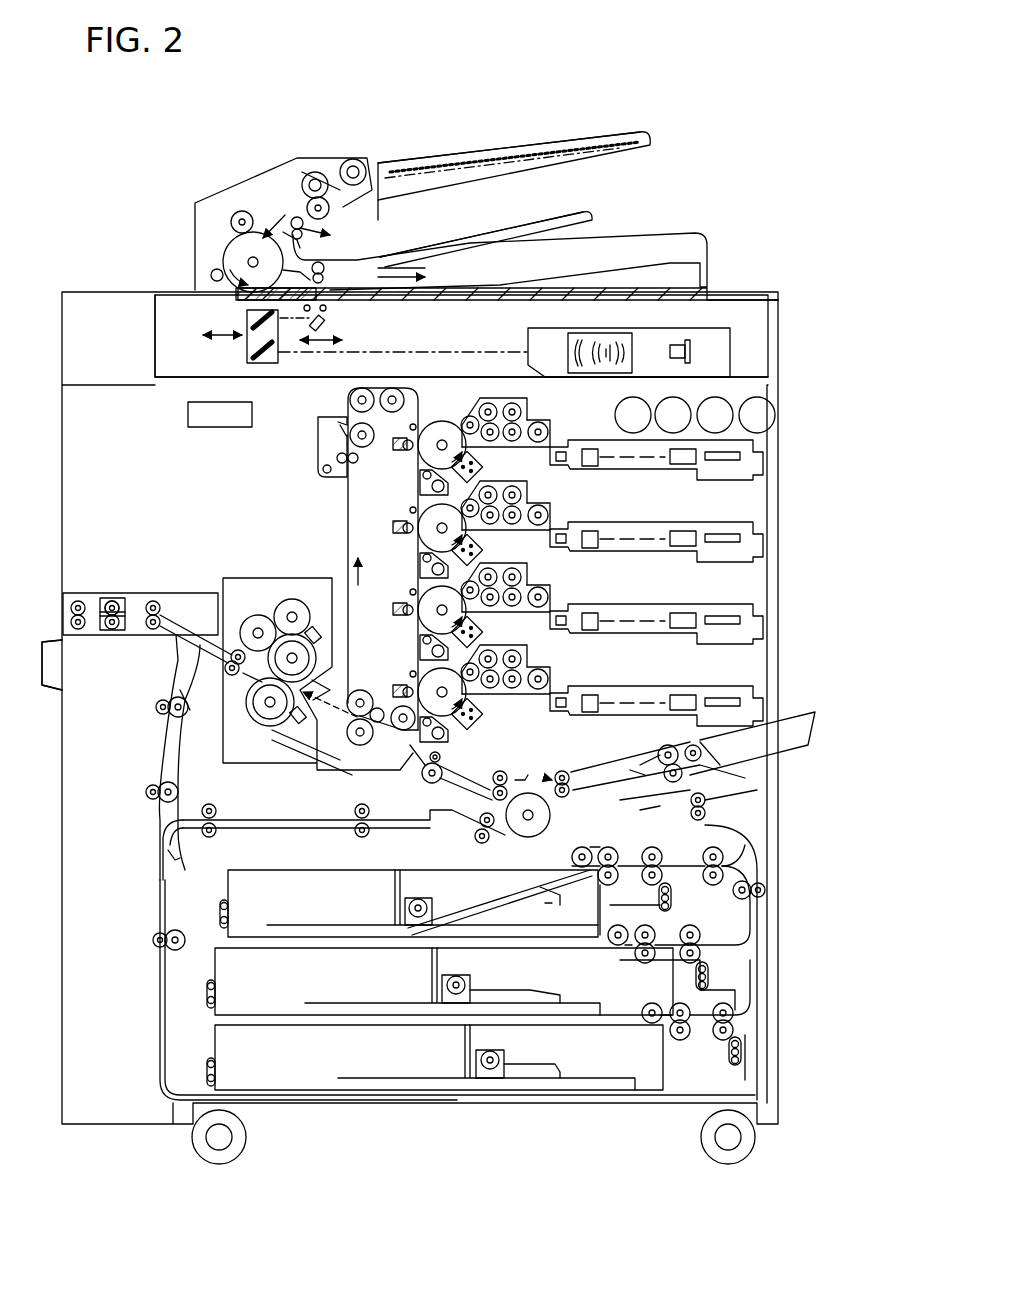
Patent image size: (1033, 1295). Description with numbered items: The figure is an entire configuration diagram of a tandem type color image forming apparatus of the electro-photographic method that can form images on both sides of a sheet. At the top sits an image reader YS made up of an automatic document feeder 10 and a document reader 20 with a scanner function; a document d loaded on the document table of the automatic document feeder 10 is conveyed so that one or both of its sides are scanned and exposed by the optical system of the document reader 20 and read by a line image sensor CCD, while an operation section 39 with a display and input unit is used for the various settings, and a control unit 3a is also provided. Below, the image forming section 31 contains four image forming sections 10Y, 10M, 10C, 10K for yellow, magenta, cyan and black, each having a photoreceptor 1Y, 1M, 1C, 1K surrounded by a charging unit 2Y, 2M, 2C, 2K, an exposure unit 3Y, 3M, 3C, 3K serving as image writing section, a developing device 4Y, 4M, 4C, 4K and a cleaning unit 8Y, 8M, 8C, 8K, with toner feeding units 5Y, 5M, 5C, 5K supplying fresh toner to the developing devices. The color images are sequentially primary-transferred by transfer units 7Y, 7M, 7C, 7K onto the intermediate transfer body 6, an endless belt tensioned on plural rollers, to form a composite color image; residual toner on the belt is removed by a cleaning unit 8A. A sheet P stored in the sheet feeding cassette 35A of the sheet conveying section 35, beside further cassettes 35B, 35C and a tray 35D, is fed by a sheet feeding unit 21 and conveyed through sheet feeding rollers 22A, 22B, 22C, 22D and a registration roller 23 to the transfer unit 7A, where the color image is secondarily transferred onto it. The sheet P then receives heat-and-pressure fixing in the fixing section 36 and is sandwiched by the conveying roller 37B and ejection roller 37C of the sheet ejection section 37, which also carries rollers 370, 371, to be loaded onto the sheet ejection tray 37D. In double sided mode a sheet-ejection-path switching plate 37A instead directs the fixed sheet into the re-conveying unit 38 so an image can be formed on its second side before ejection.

The automatic document feeder 10 is at (690, 136).
The document d is at (508, 152).
The image reader YS is at (710, 220).
The operation section 39 is at (770, 290).
The document reader 20 is at (786, 360).
The image forming section 31 is at (436, 386).
The line image sensor CCD is at (694, 345).
The control unit 3a is at (190, 418).
The intermediate transfer body 6 is at (348, 519).
The cleaning unit 8A is at (318, 447).
The photoreceptor 1Y is at (420, 422).
The photoreceptor 1M is at (418, 512).
The photoreceptor 1C is at (418, 594).
The photoreceptor 1K is at (420, 674).
The charging unit 2Y is at (481, 466).
The charging unit 2M is at (481, 549).
The charging unit 2C is at (481, 631).
The charging unit 2K is at (481, 714).
The exposure unit 3Y is at (652, 470).
The exposure unit 3M is at (650, 552).
The exposure unit 3C is at (718, 604).
The exposure unit 3K is at (668, 687).
The developing device 4Y is at (478, 402).
The developing device 4M is at (528, 497).
The developing device 4C is at (528, 579).
The developing device 4K is at (528, 661).
The toner feeding unit 5Y is at (633, 415).
The toner feeding unit 5M is at (673, 415).
The toner feeding unit 5C is at (715, 415).
The toner feeding unit 5K is at (757, 415).
The transfer unit 7Y is at (408, 452).
The transfer unit 7M is at (408, 535).
The transfer unit 7C is at (408, 617).
The transfer unit 7K is at (395, 688).
The cleaning unit 8Y is at (420, 487).
The cleaning unit 8M is at (420, 572).
The cleaning unit 8C is at (420, 645).
The cleaning unit 8K is at (448, 735).
The image forming section 10Y is at (608, 417).
The image forming section 10M is at (625, 502).
The image forming section 10C is at (622, 585).
The image forming section 10K is at (622, 668).
The transfer unit 7A is at (368, 745).
The fixing section 36 is at (252, 586).
The sheet ejection section 37 is at (55, 592).
The sheet-ejection-path switching plate 37A is at (175, 665).
The conveying roller 37B is at (162, 608).
The ejection roller 37C is at (80, 600).
The sheet ejection tray 37D is at (40, 640).
The reversing roller unit 370 is at (112, 596).
The reversing roller 371 is at (115, 598).
The re-conveying unit 38 is at (130, 832).
The registration roller 23 is at (425, 782).
The sheet feeding unit 21 is at (608, 847).
The sheet feeding roller 22A is at (712, 848).
The sheet feeding roller 22B is at (690, 812).
The sheet feeding roller 22C is at (564, 797).
The conveyance roller D 22D is at (505, 775).
The sheet P is at (505, 878).
The sheet conveying section 35 is at (200, 910).
The sheet feeding cassette 35A is at (300, 885).
The sheet feed cassette B 35B is at (215, 968).
The sheet feed cassette C 35C is at (215, 1045).
The manual feed tray 35D is at (805, 750).